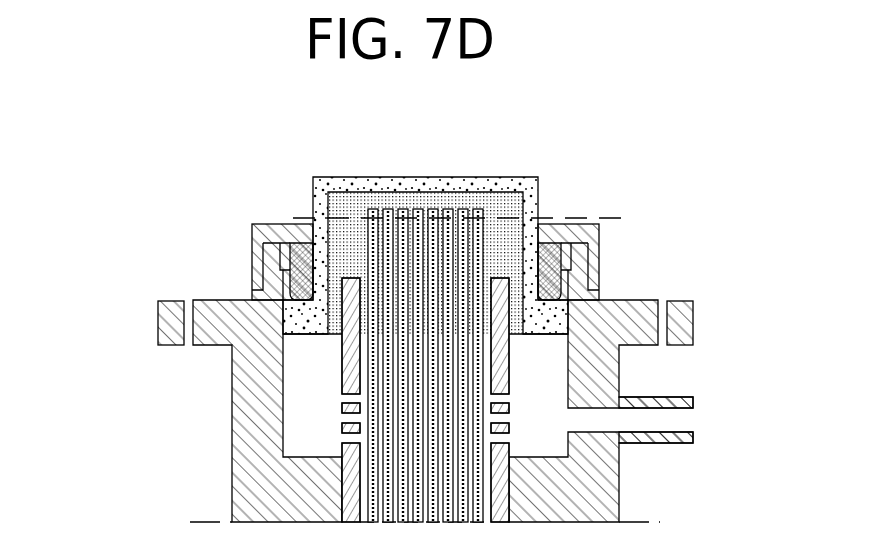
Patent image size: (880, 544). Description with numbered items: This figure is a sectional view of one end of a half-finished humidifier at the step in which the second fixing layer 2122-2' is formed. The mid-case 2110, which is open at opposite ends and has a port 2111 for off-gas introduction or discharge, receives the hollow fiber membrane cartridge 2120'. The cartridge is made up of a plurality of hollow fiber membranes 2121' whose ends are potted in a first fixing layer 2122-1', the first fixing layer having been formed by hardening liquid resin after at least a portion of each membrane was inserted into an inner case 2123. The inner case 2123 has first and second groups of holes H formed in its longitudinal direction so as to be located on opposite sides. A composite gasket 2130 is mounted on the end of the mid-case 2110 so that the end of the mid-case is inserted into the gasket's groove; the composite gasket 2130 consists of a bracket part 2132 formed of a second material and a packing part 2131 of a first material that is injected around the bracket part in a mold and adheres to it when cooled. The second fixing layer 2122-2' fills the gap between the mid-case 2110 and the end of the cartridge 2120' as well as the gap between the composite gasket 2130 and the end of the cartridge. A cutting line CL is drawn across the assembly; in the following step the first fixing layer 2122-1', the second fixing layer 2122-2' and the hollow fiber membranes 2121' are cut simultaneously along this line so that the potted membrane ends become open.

The mid-case 2110 is at (272, 494).
The port 2111 is at (645, 442).
The hollow fiber membrane cartridge 2120' is at (437, 303).
The hollow fiber membranes 2121' is at (425, 325).
The first fixing layer 2122-1' is at (435, 231).
The second fixing layer 2122-2' is at (425, 227).
The inner case 2123 is at (496, 278).
The composite gasket 2130 is at (352, 262).
The packing part 2131 is at (267, 237).
The bracket part 2132 is at (289, 280).
The holes H is at (340, 397).
The cutting line CL is at (474, 218).